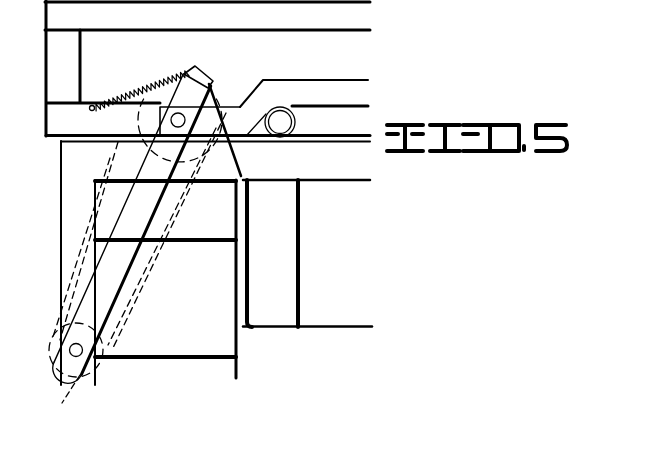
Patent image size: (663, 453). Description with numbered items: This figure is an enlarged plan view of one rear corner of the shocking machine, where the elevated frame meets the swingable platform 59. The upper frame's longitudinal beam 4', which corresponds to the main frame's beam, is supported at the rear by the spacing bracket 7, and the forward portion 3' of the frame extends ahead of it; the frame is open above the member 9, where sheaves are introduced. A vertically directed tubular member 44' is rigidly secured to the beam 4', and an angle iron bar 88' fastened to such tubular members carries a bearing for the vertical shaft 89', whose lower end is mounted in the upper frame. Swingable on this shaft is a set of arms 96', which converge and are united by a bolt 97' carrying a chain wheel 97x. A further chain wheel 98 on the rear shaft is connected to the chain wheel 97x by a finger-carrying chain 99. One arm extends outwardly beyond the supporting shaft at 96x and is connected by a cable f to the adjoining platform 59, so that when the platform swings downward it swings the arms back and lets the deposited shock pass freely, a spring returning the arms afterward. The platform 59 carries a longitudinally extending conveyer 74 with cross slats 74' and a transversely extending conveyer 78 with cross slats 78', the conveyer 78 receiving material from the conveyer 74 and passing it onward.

The frame top member 3' is at (207, 16).
The spacing bracket 7 is at (103, 68).
The longitudinal beam of upper frame 4' is at (208, 129).
The member 9 is at (147, 80).
The chain wheel 98 is at (177, 72).
The set of arms 96' is at (114, 228).
The outwardly extending end of arm 96x is at (201, 80).
The vertically directed shaft 89' is at (203, 95).
The tubular member 44' is at (304, 96).
The angle iron bar 88' is at (330, 81).
The cable f is at (232, 140).
The chain 99 is at (82, 198).
The transversely extending conveyer 78 is at (165, 282).
The cross slat 78' is at (165, 375).
The platform 59 is at (306, 166).
The longitudinally extending conveyer 74 is at (298, 253).
The cross slat 74' is at (307, 304).
The bolt 97' is at (55, 351).
The chain wheel 97x is at (67, 400).